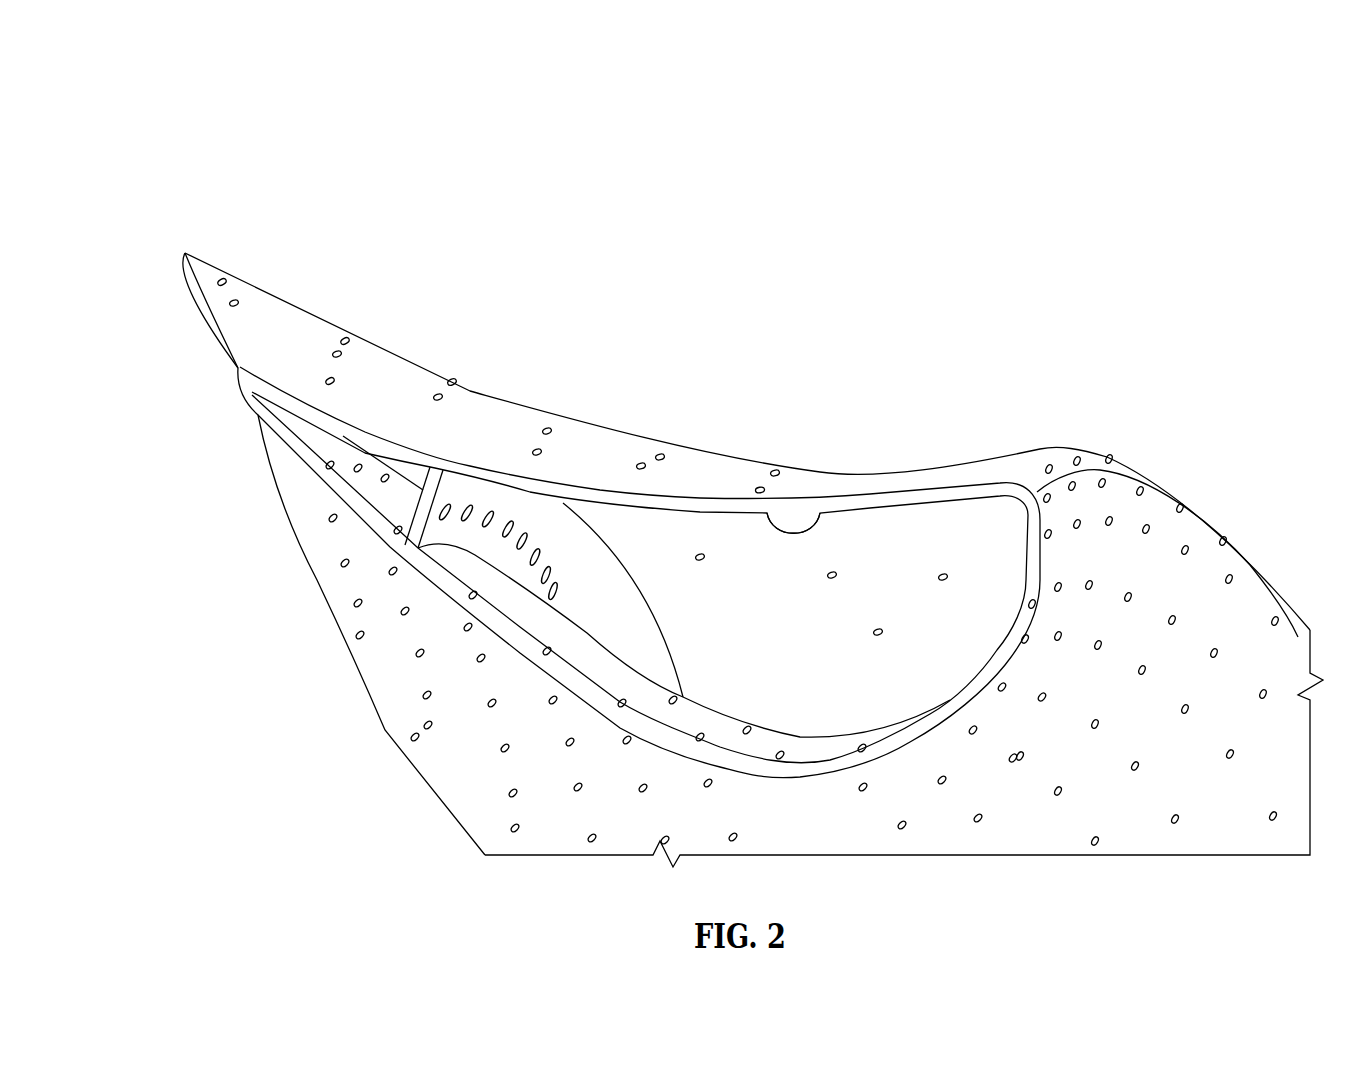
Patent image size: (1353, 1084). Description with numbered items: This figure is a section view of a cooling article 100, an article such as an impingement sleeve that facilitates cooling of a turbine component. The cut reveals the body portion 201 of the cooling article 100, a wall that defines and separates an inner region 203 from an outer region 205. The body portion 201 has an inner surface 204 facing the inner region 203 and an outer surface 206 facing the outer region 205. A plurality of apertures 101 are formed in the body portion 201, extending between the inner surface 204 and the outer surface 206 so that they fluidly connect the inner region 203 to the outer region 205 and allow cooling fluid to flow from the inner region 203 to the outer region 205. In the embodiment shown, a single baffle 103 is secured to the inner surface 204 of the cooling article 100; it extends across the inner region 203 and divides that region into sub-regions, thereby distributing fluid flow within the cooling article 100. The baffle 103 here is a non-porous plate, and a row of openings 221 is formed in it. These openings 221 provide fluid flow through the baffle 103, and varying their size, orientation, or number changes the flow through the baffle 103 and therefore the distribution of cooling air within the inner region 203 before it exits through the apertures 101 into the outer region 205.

The cooling article 100 is at (420, 170).
The apertures 101 is at (330, 380).
The baffle 103 is at (427, 494).
The body portion 201 is at (475, 612).
The inner region 203 is at (787, 632).
The inner surface 204 is at (778, 522).
The outer region 205 is at (1090, 357).
The outer surface 206 is at (212, 276).
The openings 221 is at (540, 550).